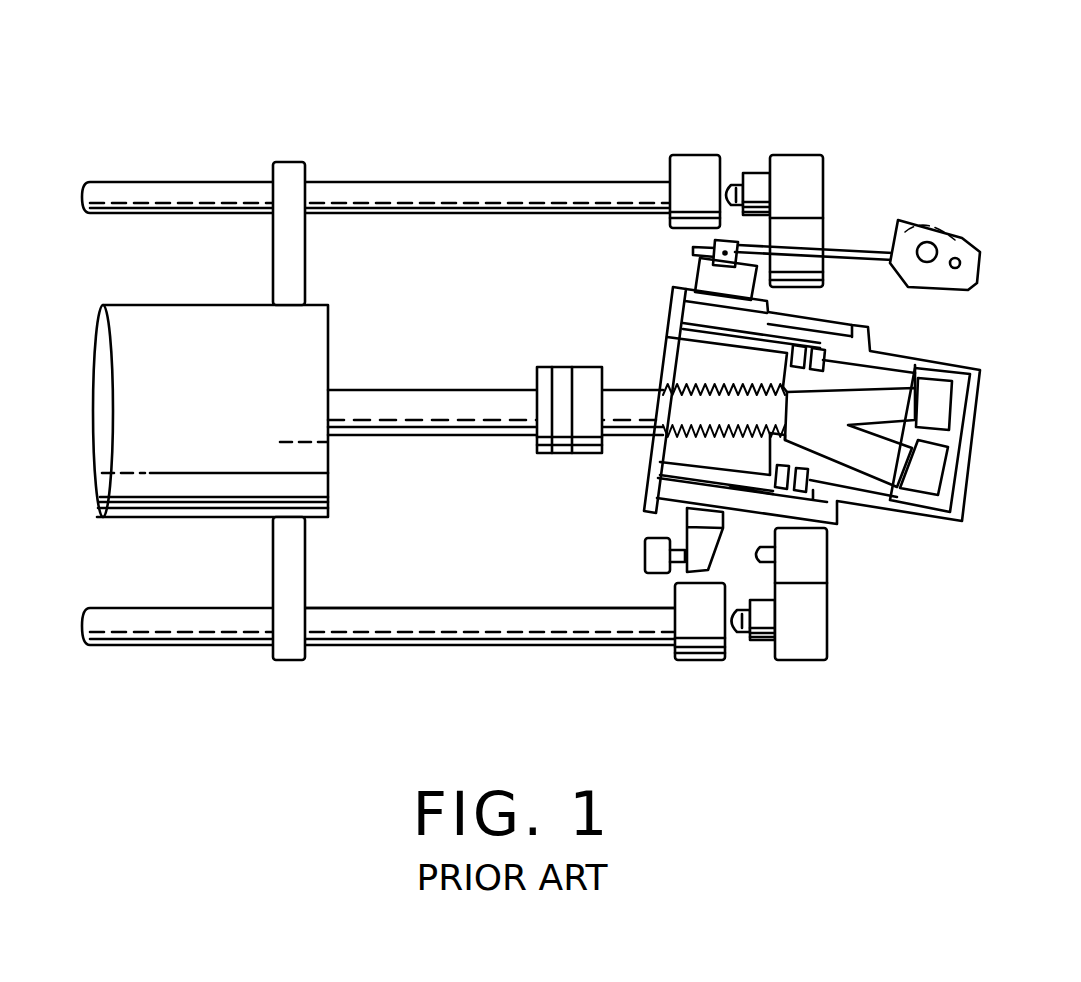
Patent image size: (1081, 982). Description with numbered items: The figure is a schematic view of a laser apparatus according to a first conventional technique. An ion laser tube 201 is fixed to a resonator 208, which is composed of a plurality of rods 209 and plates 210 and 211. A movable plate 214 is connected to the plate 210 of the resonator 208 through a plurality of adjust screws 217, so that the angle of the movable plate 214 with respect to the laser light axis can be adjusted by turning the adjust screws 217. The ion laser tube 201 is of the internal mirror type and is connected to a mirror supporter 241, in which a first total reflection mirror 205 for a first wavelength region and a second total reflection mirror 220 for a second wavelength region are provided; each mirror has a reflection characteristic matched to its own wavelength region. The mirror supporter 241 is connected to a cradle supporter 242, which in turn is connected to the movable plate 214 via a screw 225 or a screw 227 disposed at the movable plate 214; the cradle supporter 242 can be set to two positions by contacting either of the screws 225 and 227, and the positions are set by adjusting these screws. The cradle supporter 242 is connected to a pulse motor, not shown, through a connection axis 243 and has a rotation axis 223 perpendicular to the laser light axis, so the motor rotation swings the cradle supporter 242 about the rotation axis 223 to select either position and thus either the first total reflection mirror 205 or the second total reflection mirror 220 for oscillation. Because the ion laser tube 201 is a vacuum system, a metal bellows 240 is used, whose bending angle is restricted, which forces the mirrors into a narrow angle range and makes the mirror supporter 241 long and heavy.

The ion laser tube 201 is at (185, 518).
The resonator 208 is at (330, 608).
The rods 209 is at (150, 182).
The plate 210 is at (690, 155).
The plate 211 is at (290, 162).
The movable plate 214 is at (790, 155).
The adjust screws 217 is at (757, 173).
The second total reflection mirror 220 is at (947, 490).
The rotation axis 223 is at (717, 415).
The screw 225 is at (652, 600).
The screw 227 is at (757, 562).
The bellows 240 is at (675, 375).
The mirror supporter 241 is at (883, 353).
The cradle supporter 242 is at (668, 290).
The connection axis 243 is at (860, 250).
The first total reflection mirror 205 is at (937, 385).